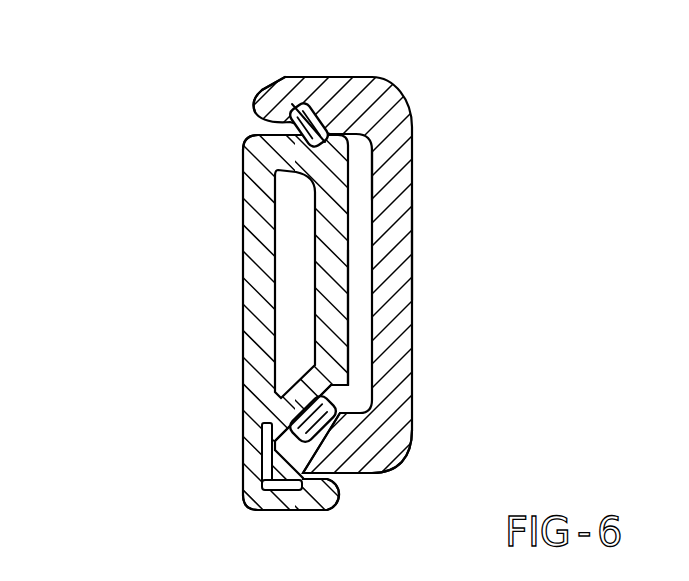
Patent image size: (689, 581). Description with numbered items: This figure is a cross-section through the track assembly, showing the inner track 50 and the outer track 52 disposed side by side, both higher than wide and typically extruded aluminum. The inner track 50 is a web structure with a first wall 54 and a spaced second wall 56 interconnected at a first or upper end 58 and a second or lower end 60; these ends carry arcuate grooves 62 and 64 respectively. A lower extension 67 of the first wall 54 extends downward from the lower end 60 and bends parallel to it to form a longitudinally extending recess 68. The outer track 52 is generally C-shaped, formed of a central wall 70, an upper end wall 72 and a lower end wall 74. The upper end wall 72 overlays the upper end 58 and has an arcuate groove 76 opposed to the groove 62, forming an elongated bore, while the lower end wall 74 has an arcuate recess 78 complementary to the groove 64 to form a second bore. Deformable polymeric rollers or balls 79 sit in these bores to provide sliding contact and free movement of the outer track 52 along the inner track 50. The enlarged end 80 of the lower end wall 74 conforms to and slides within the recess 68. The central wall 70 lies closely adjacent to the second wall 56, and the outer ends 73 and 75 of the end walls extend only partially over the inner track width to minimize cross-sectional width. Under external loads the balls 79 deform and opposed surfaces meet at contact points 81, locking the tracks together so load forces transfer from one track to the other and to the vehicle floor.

The inner track 50 is at (204, 256).
The outer track 52 is at (453, 28).
The first wall 54 is at (262, 307).
The second wall 56 is at (340, 333).
The first or upper end 58 is at (247, 140).
The second or lower end 60 is at (340, 400).
The arcuate groove 62 is at (400, 167).
The arcuate groove 64 is at (243, 437).
The lower extension 67 is at (260, 455).
The recess 68 is at (245, 492).
The central wall 70 is at (400, 243).
The first or upper end wall 72 is at (330, 84).
The outer end 73 is at (254, 98).
The second or lower end wall 74 is at (374, 473).
The outer end 75 is at (262, 425).
The arcuate groove 76 is at (266, 86).
The arcuate recess 78 is at (352, 418).
The rollers or balls 79 is at (291, 104).
The enlarged end 80 is at (343, 490).
The contact points 81 is at (336, 104).